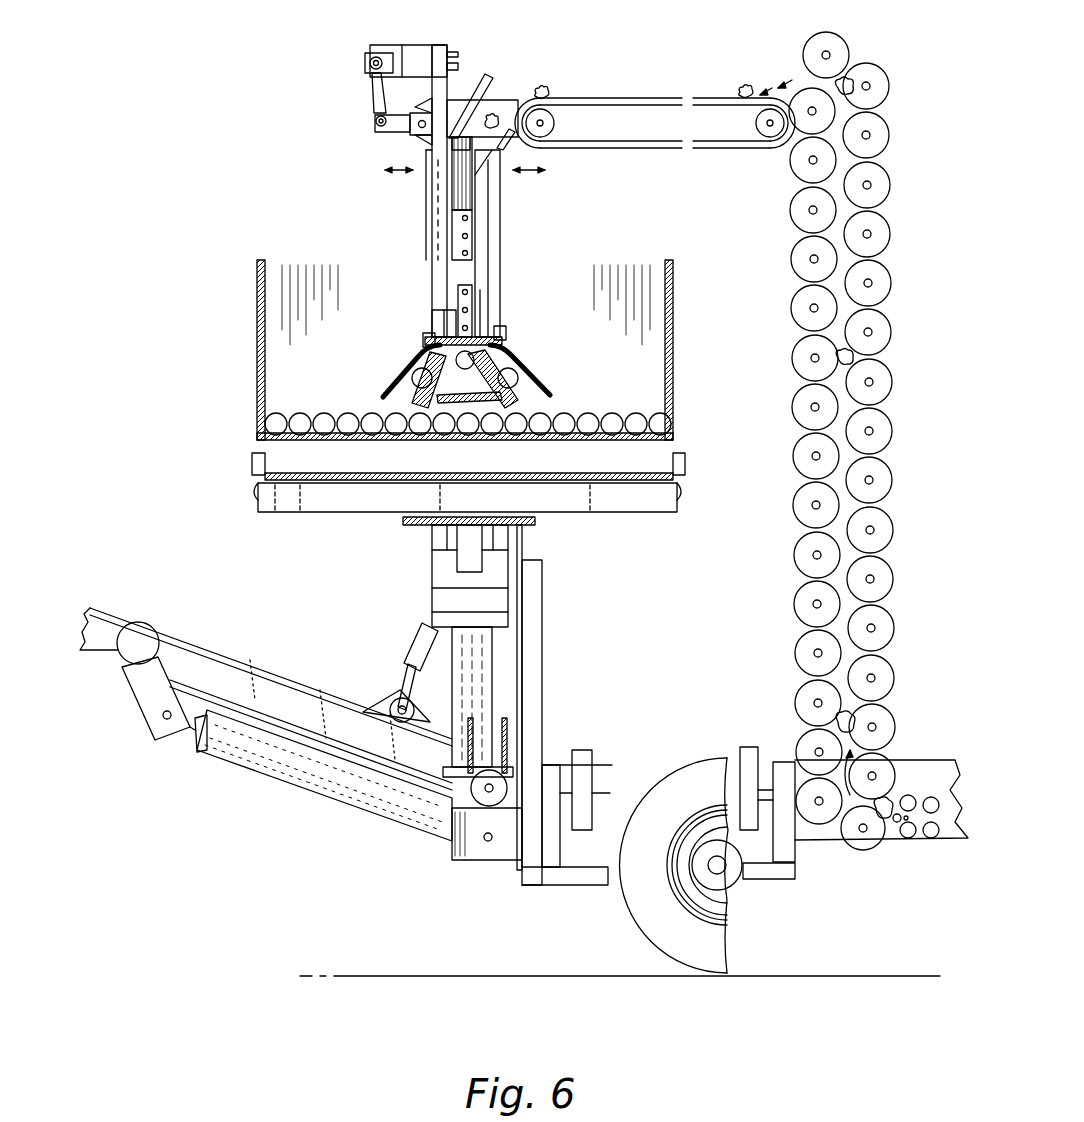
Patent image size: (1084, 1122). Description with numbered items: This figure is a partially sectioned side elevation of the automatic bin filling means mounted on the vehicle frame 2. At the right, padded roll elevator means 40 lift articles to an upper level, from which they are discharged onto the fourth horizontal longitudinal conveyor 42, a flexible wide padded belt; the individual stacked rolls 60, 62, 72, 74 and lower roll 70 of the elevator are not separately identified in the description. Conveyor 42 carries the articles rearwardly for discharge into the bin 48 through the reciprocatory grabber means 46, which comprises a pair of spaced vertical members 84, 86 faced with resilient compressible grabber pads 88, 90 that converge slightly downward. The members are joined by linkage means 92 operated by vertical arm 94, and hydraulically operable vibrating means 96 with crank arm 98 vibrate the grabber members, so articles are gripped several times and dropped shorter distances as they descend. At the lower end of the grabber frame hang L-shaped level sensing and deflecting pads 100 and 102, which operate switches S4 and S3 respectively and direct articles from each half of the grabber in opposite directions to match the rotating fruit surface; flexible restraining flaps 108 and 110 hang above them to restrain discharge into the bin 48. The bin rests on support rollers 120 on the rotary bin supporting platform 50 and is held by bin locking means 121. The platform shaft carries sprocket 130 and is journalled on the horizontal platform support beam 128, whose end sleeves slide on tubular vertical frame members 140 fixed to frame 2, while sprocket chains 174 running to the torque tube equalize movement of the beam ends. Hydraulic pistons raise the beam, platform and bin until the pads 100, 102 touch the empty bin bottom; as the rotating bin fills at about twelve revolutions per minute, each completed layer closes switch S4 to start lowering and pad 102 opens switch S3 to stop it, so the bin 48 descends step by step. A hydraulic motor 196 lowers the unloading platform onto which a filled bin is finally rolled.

The vehicle frame 2 is at (522, 886).
The padded roll elevator means 40 is at (877, 55).
The fourth horizontal longitudinal conveyor 42 is at (617, 142).
The reciprocatory grabber means 46 is at (510, 80).
The collecting bin 48 is at (675, 370).
The bin supporting platform 50 is at (593, 498).
The rollers 60 is at (795, 292).
The rollers 62 is at (880, 168).
The bottom roller 70 is at (862, 852).
The roller 72 is at (878, 530).
The top roller 74 is at (815, 38).
The vertical grabber member 84 is at (432, 276).
The vertical grabber member 86 is at (488, 282).
The grabber pad 88 is at (445, 325).
The grabber pad 90 is at (490, 300).
The linkage means 92 is at (468, 225).
The vertical arm 94 is at (440, 253).
The hydraulically operable vibrating means 96 is at (420, 46).
The crank arm 98 is at (385, 52).
The level sensing and deflecting pad 100 is at (484, 440).
The level sensing and deflecting pad 102 is at (432, 440).
The flexible restraining flap 108 is at (392, 396).
The flexible restraining flap 110 is at (543, 382).
The support rollers 120 is at (392, 483).
The bin locking means 121 is at (252, 468).
The horizontal platform support beam 128 is at (432, 600).
The sprocket 130 is at (415, 525).
The tubular vertical frame members 140 is at (492, 695).
The sprocket chains 174 is at (507, 728).
The hydraulic motor 196 is at (428, 648).
The switch S3 is at (506, 332).
The switch S4 is at (425, 342).